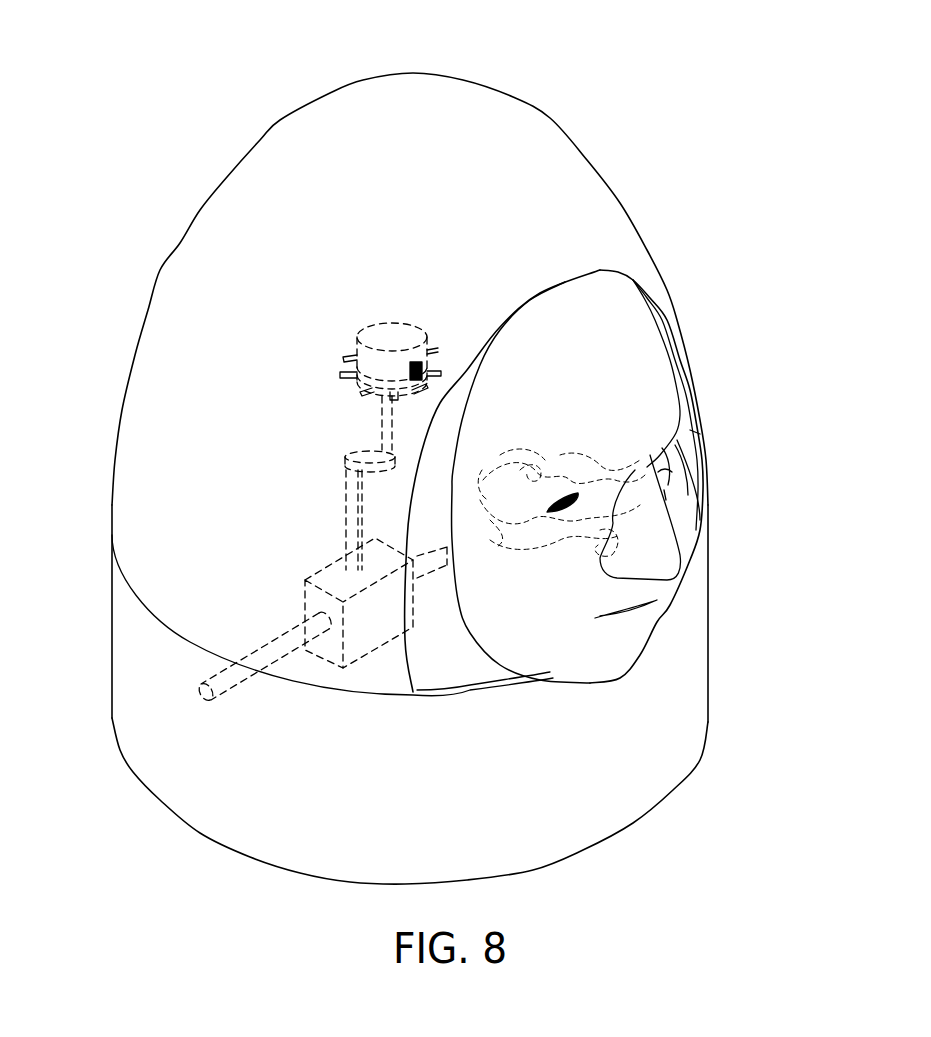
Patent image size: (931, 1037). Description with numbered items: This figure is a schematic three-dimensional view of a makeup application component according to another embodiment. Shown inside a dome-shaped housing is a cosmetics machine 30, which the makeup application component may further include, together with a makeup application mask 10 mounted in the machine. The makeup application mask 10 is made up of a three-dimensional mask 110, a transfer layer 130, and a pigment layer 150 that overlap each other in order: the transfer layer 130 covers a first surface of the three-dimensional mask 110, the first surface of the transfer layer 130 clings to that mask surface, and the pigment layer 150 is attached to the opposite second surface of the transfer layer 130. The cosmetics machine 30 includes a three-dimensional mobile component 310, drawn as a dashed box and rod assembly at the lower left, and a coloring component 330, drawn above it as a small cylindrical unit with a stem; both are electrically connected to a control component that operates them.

The cosmetics machine 30 is at (490, 127).
The makeup application mask 10 is at (626, 481).
The three-dimensional mask 110 is at (648, 421).
The transfer layer 130 is at (655, 363).
The pigment layer 150 is at (812, 359).
The coloring component 330 is at (383, 347).
The three-dimensional mobile component 310 is at (325, 570).